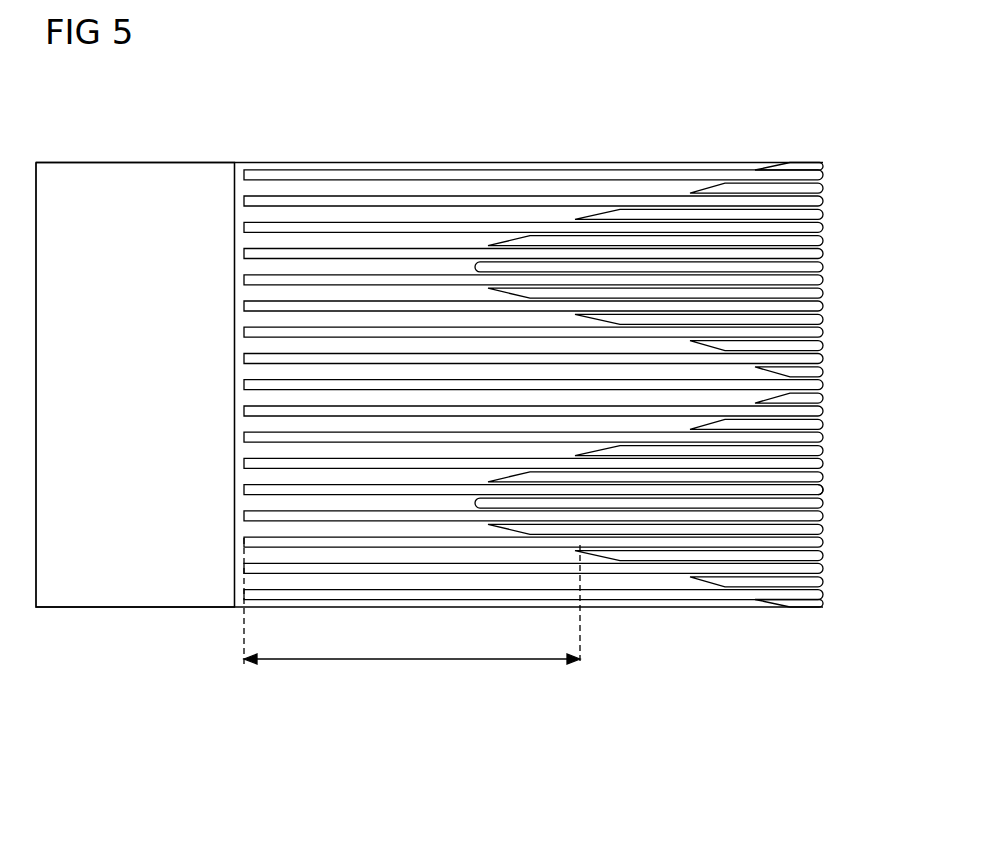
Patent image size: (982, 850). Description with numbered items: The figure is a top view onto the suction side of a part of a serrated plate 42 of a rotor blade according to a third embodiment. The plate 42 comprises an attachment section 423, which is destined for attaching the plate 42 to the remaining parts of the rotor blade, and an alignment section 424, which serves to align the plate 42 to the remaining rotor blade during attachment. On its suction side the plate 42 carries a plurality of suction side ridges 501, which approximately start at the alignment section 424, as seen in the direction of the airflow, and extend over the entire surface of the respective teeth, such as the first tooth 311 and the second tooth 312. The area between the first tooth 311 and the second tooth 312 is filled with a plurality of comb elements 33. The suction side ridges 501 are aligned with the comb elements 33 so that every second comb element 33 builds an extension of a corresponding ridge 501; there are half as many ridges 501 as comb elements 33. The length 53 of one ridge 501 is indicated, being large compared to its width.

The plate 42 is at (537, 142).
The attachment section 423 is at (136, 185).
The alignment section 424 is at (248, 529).
The first tooth 311 is at (735, 397).
The second tooth 312 is at (600, 581).
The comb elements 33 is at (826, 491).
The suction side ridges 501 is at (524, 543).
The length 53 is at (410, 661).